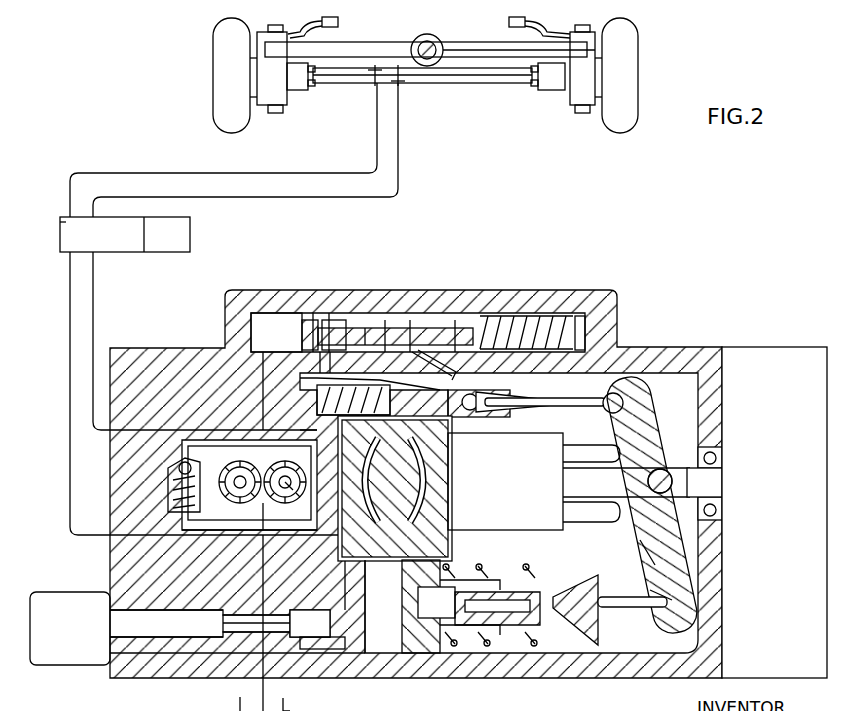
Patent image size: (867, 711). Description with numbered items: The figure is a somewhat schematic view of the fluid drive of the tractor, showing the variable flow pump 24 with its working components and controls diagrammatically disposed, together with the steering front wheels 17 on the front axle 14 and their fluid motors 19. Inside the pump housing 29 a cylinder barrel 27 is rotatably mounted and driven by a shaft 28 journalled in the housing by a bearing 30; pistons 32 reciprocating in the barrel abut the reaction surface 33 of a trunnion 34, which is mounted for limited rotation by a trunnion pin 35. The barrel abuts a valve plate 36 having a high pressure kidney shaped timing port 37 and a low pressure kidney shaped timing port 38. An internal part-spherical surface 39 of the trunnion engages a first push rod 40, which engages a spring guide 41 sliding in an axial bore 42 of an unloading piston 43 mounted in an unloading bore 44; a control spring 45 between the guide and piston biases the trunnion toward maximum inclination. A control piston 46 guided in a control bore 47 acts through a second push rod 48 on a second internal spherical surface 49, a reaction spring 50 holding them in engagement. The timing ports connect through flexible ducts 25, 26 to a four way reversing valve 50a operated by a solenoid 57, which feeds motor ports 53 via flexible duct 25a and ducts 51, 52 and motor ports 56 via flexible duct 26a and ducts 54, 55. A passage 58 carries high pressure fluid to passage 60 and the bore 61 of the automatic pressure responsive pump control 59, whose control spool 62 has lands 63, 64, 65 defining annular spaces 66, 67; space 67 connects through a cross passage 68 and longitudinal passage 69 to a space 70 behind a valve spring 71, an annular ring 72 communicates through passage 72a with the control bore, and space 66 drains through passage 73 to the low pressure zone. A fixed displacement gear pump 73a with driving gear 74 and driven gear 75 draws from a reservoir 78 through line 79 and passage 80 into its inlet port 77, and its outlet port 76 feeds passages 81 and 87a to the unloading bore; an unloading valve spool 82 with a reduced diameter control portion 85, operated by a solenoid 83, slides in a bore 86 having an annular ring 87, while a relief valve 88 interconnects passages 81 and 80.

The front axle 14 is at (435, 38).
The steering front wheels 17 is at (220, 40).
The fluid motors 19 is at (298, 82).
The variable flow pump 24 is at (567, 289).
The flexible duct 25 is at (93, 326).
The flexible duct 25a is at (305, 198).
The flexible duct 26 is at (70, 326).
The flexible duct 26a is at (305, 172).
The cylinder barrel 27 is at (500, 482).
The shaft 28 is at (722, 482).
The pump housing 29 is at (598, 679).
The bearing 30 is at (718, 462).
The pistons 32 is at (596, 446).
The reaction surface 33 is at (650, 556).
The trunnion 34 is at (655, 430).
The trunnion pin 35 is at (647, 481).
The valve plate 36 is at (405, 489).
The high pressure kidney shaped timing port 37 is at (370, 518).
The low pressure kidney shaped timing port 38 is at (422, 463).
The internal part-spherical surface 39 is at (660, 592).
The first push rod 40 is at (622, 600).
The spring guide 41 is at (540, 590).
The axial bore 42 is at (436, 602).
The unloading piston 43 is at (404, 584).
The unloading bore 44 is at (370, 646).
The control spring 45 is at (485, 572).
The control piston 46 is at (510, 392).
The control bore 47 is at (374, 386).
The second push rod 48 is at (560, 398).
The second internal spherical surface 49 is at (623, 398).
The reaction spring 50 is at (338, 389).
The four way reversing valve 50a is at (60, 222).
The duct 51 is at (365, 84).
The duct 52 is at (422, 86).
The motor ports 53 is at (315, 86).
The duct 54 is at (347, 66).
The duct 55 is at (483, 60).
The motor ports 56 is at (314, 63).
The solenoid 57 is at (156, 245).
The passage 58 is at (306, 432).
The automatic pressure responsive pump control 59 is at (420, 330).
The passage 60 is at (263, 370).
The bore 61 is at (276, 332).
The control spool 62 is at (410, 335).
The land 63 is at (455, 340).
The land 64 is at (345, 322).
The land 65 is at (315, 322).
The annular space 66 is at (385, 333).
The annular space 67 is at (329, 320).
The cross passage 68 is at (308, 346).
The longitudinal passage 69 is at (365, 330).
The space 70 is at (500, 330).
The valve spring 71 is at (545, 330).
The annular ring 72 is at (319, 358).
The passage 72a is at (330, 370).
The passage 73 is at (447, 372).
The fixed displacement gear pump 73a is at (252, 522).
The driving gear 74 is at (290, 496).
The driven gear 75 is at (240, 461).
The outlet port 76 is at (278, 462).
The inlet port 77 is at (267, 510).
The reservoir 78 is at (298, 703).
The line 79 is at (260, 698).
The passage 80 is at (262, 576).
The passage 81 is at (345, 582).
The unloading valve spool 82 is at (143, 628).
The solenoid 83 is at (49, 628).
The reduced diameter control portion 85 is at (245, 616).
The bore 86 is at (240, 624).
The annular ring 87 is at (310, 623).
The passage 87a is at (330, 650).
The relief valve 88 is at (168, 485).